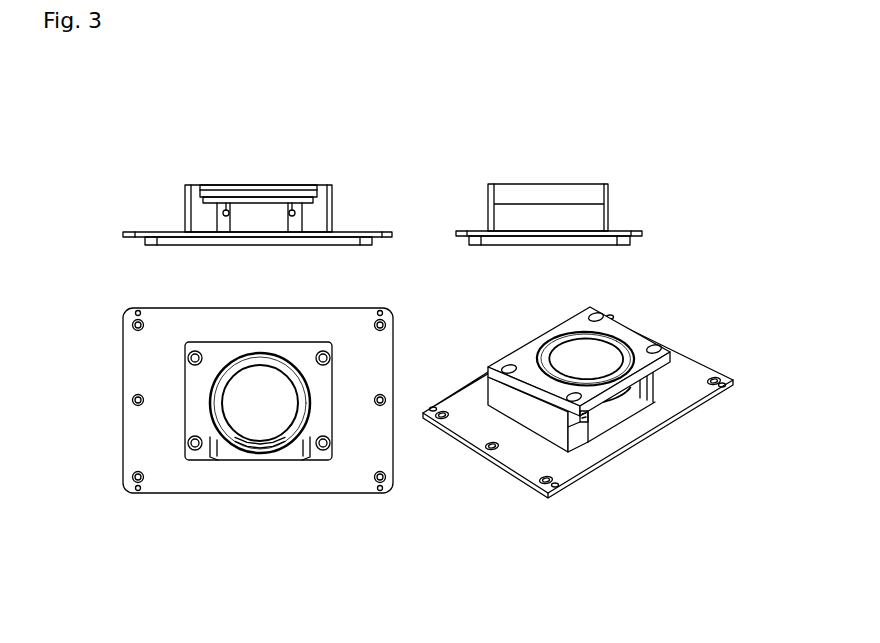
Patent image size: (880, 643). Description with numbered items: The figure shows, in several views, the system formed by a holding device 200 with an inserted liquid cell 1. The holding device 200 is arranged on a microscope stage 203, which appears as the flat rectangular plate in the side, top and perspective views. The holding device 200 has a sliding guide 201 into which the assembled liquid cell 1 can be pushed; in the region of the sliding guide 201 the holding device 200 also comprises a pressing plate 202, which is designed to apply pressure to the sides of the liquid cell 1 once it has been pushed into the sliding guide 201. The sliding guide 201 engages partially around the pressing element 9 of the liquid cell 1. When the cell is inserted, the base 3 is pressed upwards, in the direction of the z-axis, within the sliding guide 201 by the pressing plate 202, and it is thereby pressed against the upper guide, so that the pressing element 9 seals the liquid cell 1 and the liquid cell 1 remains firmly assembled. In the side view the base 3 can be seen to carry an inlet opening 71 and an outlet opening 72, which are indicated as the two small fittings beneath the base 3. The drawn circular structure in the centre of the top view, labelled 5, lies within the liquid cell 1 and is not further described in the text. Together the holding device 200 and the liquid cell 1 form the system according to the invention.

The liquid cell 1 is at (273, 463).
The base 3 is at (218, 192).
The diaphragm 5 is at (247, 403).
The pressing element 9 is at (253, 447).
The inlet opening 71 is at (227, 209).
The outlet opening 72 is at (292, 209).
The holding device 200 is at (527, 215).
The sliding guide 201 is at (648, 362).
The pressing plate 202 is at (207, 198).
The microscope stage 203 is at (172, 442).